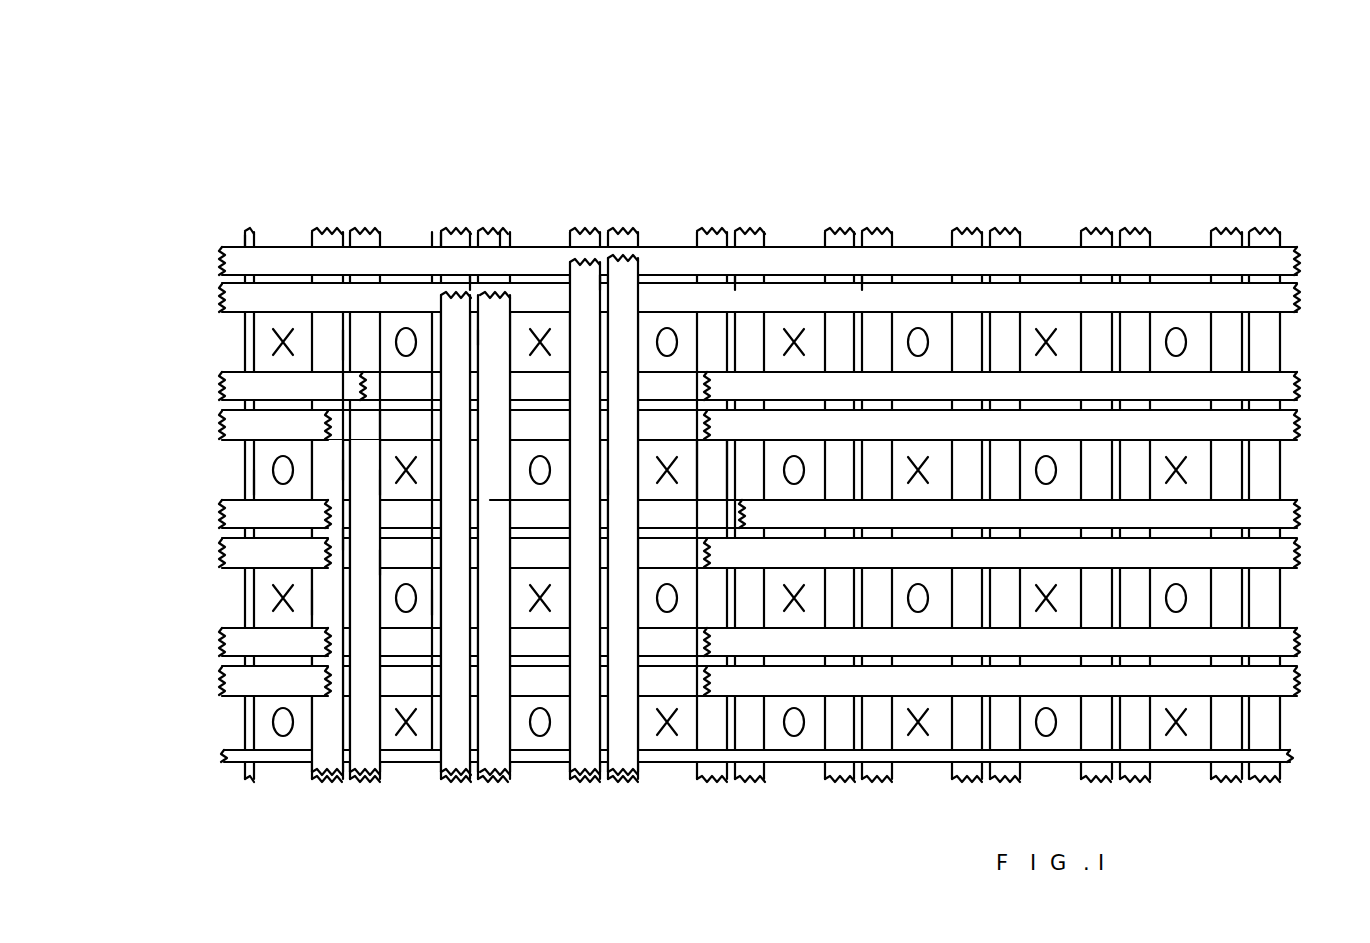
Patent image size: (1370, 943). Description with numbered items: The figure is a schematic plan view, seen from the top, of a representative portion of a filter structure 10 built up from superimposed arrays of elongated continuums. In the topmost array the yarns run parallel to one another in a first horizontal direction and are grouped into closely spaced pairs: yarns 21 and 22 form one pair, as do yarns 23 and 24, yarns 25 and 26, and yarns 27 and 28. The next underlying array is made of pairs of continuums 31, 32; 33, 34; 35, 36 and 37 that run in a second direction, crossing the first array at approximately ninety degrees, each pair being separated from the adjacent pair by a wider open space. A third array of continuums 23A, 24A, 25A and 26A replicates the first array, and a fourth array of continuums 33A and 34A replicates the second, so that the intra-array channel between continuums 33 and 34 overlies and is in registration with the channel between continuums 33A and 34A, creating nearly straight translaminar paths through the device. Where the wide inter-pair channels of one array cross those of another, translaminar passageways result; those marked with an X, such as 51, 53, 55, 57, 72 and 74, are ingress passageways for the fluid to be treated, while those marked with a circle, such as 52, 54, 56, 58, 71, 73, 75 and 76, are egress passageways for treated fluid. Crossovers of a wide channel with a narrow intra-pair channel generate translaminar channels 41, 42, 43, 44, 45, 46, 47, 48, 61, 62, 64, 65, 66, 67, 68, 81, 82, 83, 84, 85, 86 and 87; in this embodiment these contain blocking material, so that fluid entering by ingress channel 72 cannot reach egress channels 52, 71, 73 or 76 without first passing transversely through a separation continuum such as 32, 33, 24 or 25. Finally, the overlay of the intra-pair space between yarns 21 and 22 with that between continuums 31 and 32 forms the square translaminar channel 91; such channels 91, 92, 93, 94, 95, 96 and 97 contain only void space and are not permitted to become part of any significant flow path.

The filter structure 10 is at (889, 112).
The yarn 21 is at (227, 258).
The yarn 22 is at (225, 294).
The yarn 23 is at (227, 382).
The yarn 24 is at (226, 428).
The yarn 25 is at (227, 515).
The yarn 26 is at (340, 492).
The yarn 27 is at (232, 640).
The yarn 28 is at (235, 677).
The continuum 23A is at (355, 380).
The continuum 24A is at (395, 420).
The continuum 25A is at (350, 540).
The continuum 26A is at (385, 560).
The continuum 31 is at (320, 778).
The separation continuum 32 is at (365, 778).
The continuum 33 is at (455, 780).
The continuum 34 is at (500, 780).
The continuum 35 is at (585, 780).
The continuum 36 is at (630, 780).
The warp yarn 37 is at (702, 782).
The continuum 33A is at (473, 230).
The continuum 34A is at (512, 227).
The translaminar channel 41 is at (263, 277).
The translaminar channel 42 is at (412, 275).
The translaminar channel 43 is at (540, 277).
The warp strand 44 is at (653, 277).
The warp strand 45 is at (796, 310).
The warp strand 46 is at (913, 283).
The warp strand 47 is at (1037, 277).
The warp strand 48 is at (1165, 278).
The ingress translaminar passageway 51 is at (263, 330).
The egress translaminar passageway 52 is at (423, 323).
The ingress translaminar passageway 53 is at (558, 310).
The egress translaminar passageway 54 is at (660, 330).
The ingress translaminar passageway 55 is at (797, 335).
The egress translaminar passageway 56 is at (940, 330).
The crossover point 57 is at (1058, 325).
The crossover point 58 is at (1200, 330).
The blocking material 61 is at (273, 405).
The blocking material channel 62 is at (372, 385).
The weft filament 64 is at (683, 405).
The weft filament 65 is at (800, 402).
The weft filament 66 is at (930, 405).
The weft filament 67 is at (1065, 403).
The translaminar channel 68 is at (1187, 407).
The egress cross-array distribution channel 71 is at (257, 477).
The ingress cross-array distribution channel 72 is at (387, 482).
The egress cross-array distribution channel 73 is at (550, 480).
The ingress translaminar passageway 74 is at (715, 480).
The egress translaminar passageway 75 is at (810, 485).
The egress translaminar channel 76 is at (400, 603).
The blocking material channel 81 is at (347, 347).
The blocking material channel 82 is at (350, 466).
The blocking material channel 83 is at (325, 600).
The binding filament 84 is at (490, 330).
The blocking material channel 85 is at (503, 470).
The translaminar channel 86 is at (622, 470).
The blocking material channel 87 is at (418, 600).
The void translaminar channel 91 is at (340, 345).
The void translaminar channel 92 is at (477, 282).
The void translaminar channel 93 is at (605, 280).
The tie filament 94 is at (735, 280).
The void translaminar channel 95 is at (862, 282).
The void translaminar channel 96 is at (337, 400).
The tie filament 97 is at (310, 450).